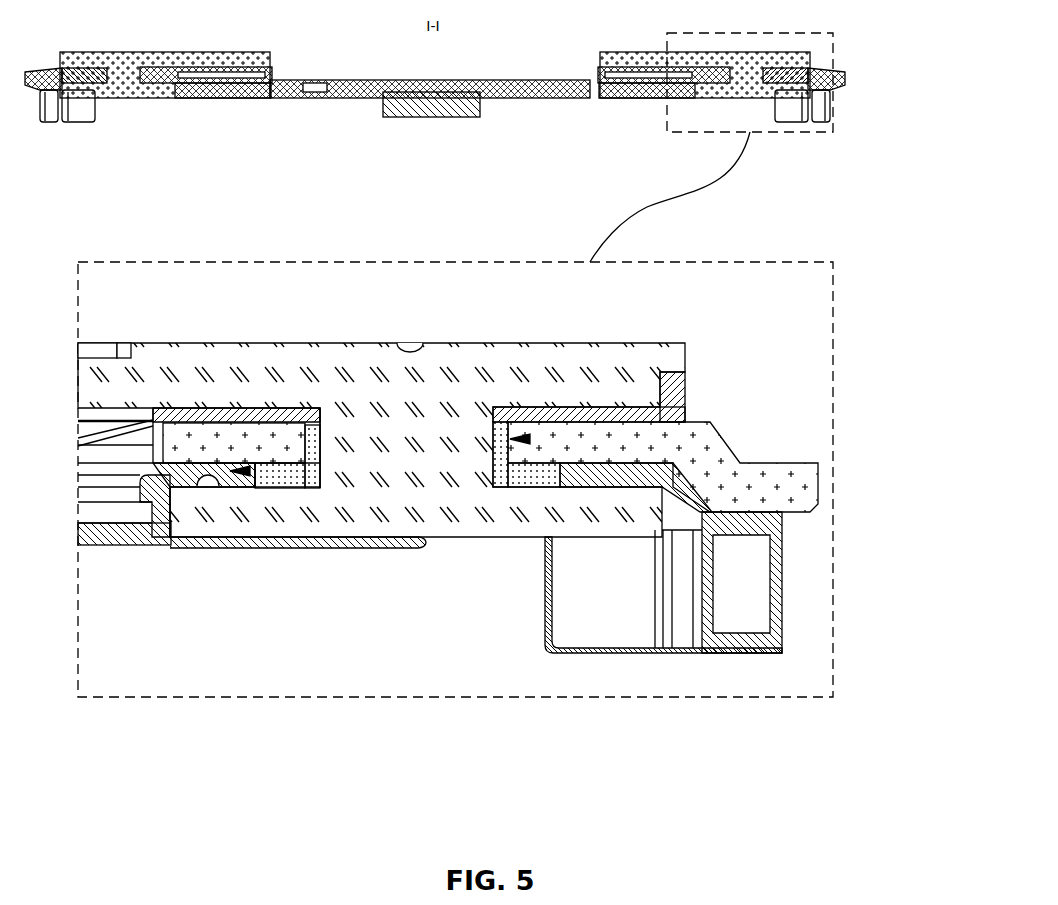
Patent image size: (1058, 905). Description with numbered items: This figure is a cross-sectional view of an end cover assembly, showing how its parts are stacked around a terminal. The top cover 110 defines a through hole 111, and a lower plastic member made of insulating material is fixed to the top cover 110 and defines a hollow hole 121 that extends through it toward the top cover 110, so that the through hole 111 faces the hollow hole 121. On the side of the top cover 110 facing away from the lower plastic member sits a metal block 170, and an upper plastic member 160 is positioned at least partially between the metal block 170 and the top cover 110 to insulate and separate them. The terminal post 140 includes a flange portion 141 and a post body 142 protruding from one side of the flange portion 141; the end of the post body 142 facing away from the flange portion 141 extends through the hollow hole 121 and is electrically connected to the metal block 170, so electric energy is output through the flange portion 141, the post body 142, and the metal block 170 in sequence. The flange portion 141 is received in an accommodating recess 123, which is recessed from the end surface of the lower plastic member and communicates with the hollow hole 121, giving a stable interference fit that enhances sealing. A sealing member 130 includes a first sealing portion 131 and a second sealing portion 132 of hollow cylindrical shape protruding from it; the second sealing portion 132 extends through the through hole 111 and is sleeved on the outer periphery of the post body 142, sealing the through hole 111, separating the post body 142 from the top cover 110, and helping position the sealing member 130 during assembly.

The top cover 110 is at (265, 430).
The through hole 111 is at (520, 438).
The hollow hole 121 is at (200, 465).
The accommodating recess 123 is at (717, 515).
The sealing member 130 is at (158, 782).
The first sealing portion 131 is at (283, 478).
The second sealing portion 132 is at (315, 445).
The terminal post 140 is at (385, 782).
The flange portion 141 is at (532, 515).
The post body 142 is at (400, 443).
The upper plastic member 160 is at (225, 410).
The metal block 170 is at (322, 373).